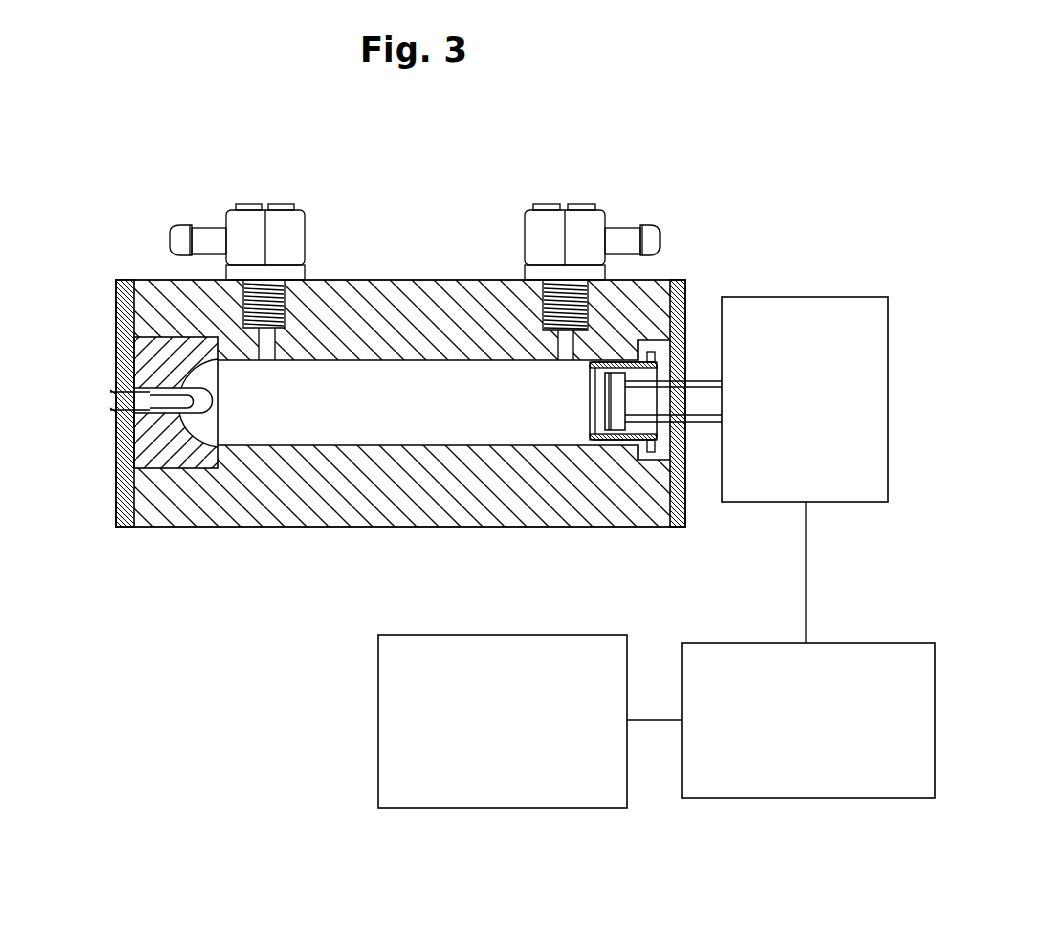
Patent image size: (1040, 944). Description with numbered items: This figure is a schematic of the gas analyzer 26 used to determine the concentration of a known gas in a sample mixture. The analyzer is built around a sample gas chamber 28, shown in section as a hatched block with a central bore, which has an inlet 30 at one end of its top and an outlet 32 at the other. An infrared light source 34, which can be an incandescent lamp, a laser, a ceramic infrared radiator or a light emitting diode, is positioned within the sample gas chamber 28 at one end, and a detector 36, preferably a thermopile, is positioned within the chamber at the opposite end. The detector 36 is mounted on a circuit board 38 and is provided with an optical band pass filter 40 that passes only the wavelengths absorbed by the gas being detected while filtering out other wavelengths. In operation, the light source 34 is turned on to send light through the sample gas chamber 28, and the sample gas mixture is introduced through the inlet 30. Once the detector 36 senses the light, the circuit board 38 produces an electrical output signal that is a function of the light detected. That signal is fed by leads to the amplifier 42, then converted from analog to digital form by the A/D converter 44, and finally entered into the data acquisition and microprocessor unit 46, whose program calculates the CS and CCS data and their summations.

The gas analyzer 26 is at (121, 325).
The sample gas chamber 28 is at (232, 520).
The inlet 30 is at (292, 227).
The outlet 32 is at (542, 228).
The infrared light source 34 is at (202, 412).
The detector 36 is at (667, 338).
The circuit board 38 is at (685, 527).
The optical band pass filter 40 is at (615, 400).
The amplifier 42 is at (888, 360).
The analog to digital (A/D) converter 44 is at (805, 798).
The data acquisition and microprocessor unit 46 is at (488, 808).